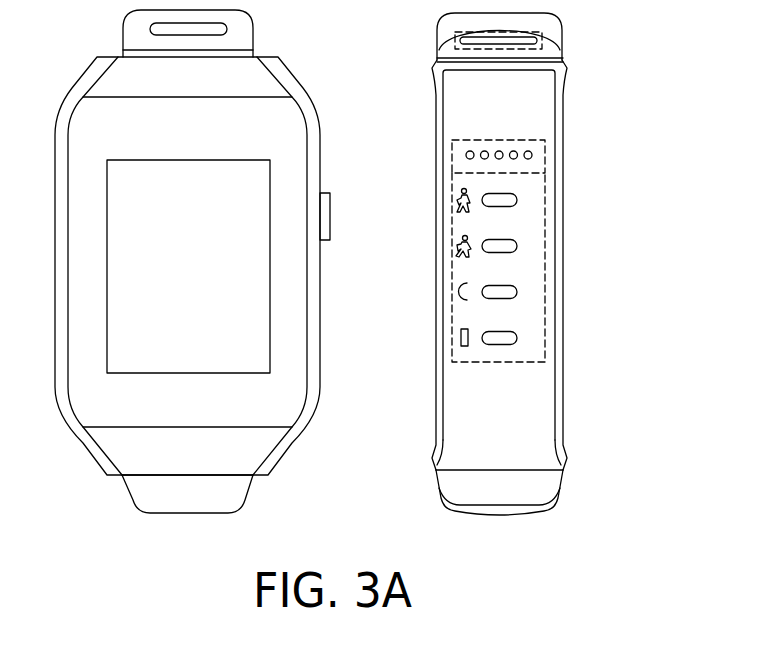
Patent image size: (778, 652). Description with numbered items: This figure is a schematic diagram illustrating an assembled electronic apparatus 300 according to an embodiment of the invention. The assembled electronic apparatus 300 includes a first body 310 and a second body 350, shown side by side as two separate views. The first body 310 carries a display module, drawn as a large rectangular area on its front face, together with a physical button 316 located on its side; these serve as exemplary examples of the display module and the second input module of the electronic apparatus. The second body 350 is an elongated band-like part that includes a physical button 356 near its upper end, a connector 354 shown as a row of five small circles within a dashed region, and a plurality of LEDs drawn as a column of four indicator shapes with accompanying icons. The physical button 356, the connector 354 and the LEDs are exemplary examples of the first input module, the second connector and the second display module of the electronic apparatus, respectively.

The assembled electronic apparatus 300 is at (369, 281).
The first body 310 is at (237, 261).
The physical button 316 is at (331, 218).
The second body 350 is at (554, 264).
The connector 354 is at (532, 155).
The physical button 356 is at (545, 45).